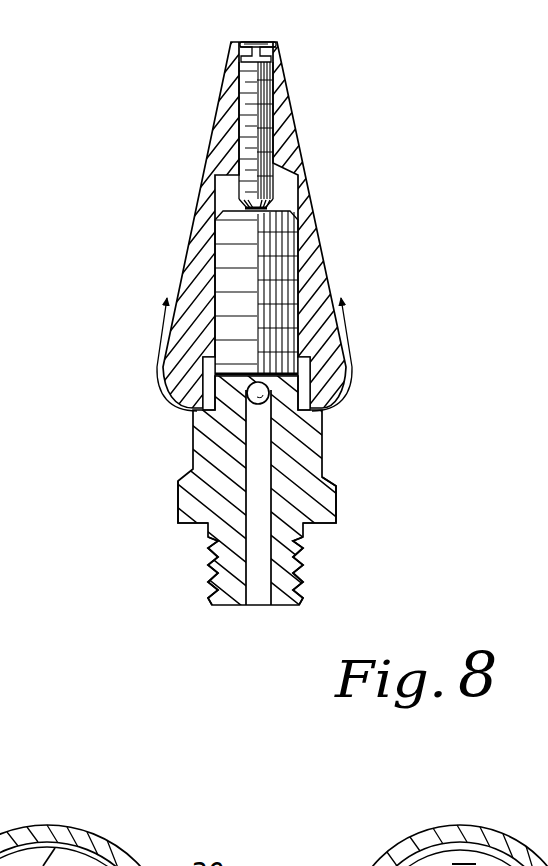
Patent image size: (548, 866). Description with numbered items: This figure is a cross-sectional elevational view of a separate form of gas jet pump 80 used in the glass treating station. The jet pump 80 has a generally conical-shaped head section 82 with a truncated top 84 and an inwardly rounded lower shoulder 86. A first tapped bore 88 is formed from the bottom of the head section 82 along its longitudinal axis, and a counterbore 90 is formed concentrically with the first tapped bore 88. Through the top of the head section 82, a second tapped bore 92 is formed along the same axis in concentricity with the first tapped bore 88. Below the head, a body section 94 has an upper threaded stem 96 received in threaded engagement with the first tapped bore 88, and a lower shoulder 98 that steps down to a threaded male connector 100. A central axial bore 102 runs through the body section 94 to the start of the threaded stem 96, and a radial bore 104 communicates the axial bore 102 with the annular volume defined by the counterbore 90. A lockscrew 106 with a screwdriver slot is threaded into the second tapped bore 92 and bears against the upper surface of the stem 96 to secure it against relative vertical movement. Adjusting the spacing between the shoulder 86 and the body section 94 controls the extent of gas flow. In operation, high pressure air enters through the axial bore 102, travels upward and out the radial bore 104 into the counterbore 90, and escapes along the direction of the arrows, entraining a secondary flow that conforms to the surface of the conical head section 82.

The gas jet pump 80 is at (174, 138).
The head section 82 is at (282, 123).
The truncated top 84 is at (277, 43).
The lower shoulder 86 is at (177, 380).
The first tapped bore 88 is at (286, 207).
The counterbore 90 is at (305, 371).
The second tapped bore 92 is at (244, 42).
The body section 94 is at (197, 434).
The upper threaded stem 96 is at (227, 252).
The lower shoulder 98 is at (195, 522).
The threaded male connector 100 is at (303, 562).
The central axial bore 102 is at (258, 594).
The radial bore 104 is at (264, 404).
The lockscrew 106 is at (247, 108).